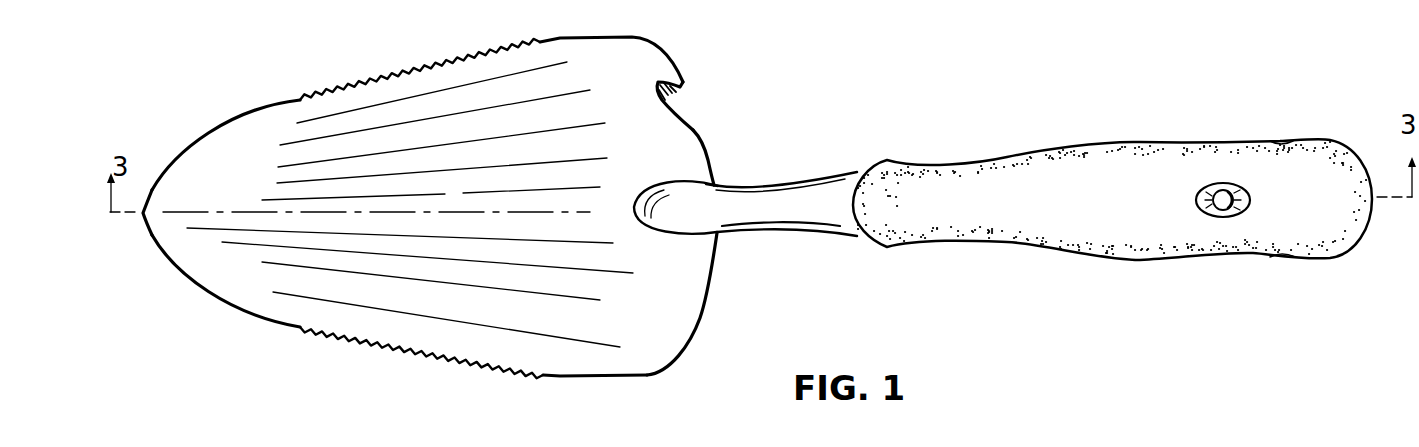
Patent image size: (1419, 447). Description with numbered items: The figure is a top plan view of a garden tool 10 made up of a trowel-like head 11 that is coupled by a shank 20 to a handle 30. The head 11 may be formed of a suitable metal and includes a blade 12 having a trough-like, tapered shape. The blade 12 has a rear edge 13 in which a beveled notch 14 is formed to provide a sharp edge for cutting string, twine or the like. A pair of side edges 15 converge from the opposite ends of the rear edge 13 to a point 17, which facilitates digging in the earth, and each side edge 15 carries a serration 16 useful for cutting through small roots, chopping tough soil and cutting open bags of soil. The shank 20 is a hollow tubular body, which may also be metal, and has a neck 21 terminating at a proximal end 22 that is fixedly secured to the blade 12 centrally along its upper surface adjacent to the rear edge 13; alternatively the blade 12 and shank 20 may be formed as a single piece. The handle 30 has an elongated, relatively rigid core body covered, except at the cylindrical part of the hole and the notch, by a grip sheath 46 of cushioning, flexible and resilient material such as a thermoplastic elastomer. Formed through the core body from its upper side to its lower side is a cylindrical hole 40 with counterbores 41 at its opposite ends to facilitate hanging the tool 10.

The garden tool 10 is at (1048, 98).
The head 11 is at (235, 329).
The blade 12 is at (256, 128).
The rear edge 13 is at (708, 279).
The beveled notch 14 is at (683, 90).
The side edges 15 is at (637, 36).
The serration 16 is at (448, 60).
The point 17 is at (141, 217).
The shank 20 is at (807, 176).
The neck 21 is at (685, 202).
The proximal end 22 is at (643, 224).
The handle 30 is at (1192, 106).
The cylindrical hole 40 is at (1234, 190).
The counterbores 41 is at (1210, 184).
The grip sheath 46 is at (1040, 242).